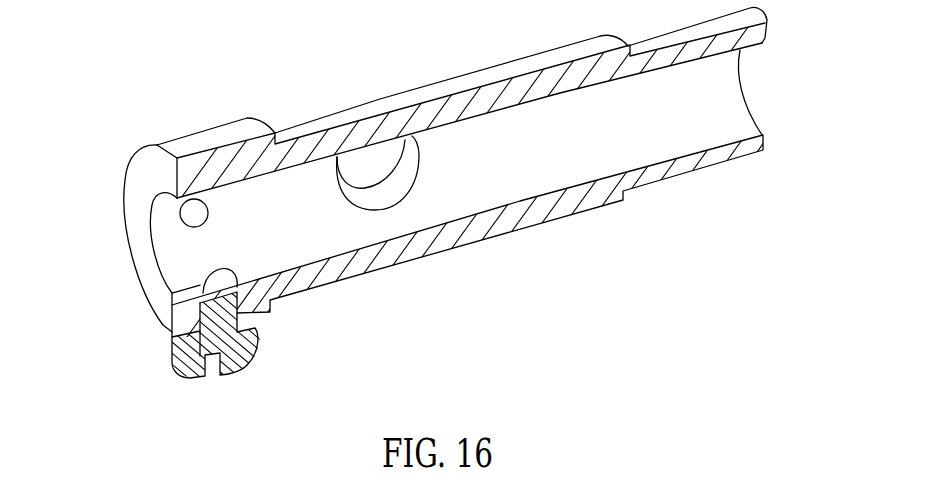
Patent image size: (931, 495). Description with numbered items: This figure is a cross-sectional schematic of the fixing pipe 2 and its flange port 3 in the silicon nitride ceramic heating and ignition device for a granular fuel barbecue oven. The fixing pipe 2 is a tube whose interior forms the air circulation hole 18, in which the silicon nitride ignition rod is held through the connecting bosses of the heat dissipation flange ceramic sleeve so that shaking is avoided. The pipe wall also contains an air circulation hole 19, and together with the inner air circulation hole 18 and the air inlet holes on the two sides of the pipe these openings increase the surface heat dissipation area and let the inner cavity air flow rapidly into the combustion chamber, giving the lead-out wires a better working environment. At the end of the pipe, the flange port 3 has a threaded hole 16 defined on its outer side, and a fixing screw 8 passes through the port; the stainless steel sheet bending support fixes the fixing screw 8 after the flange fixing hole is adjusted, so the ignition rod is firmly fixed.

The fixing pipe 2 is at (510, 221).
The flange port 3 is at (140, 265).
The fixing screw 8 is at (195, 357).
The threaded hole 16 is at (192, 207).
The air circulation hole 18 is at (720, 90).
The air circulation hole 19 is at (383, 193).